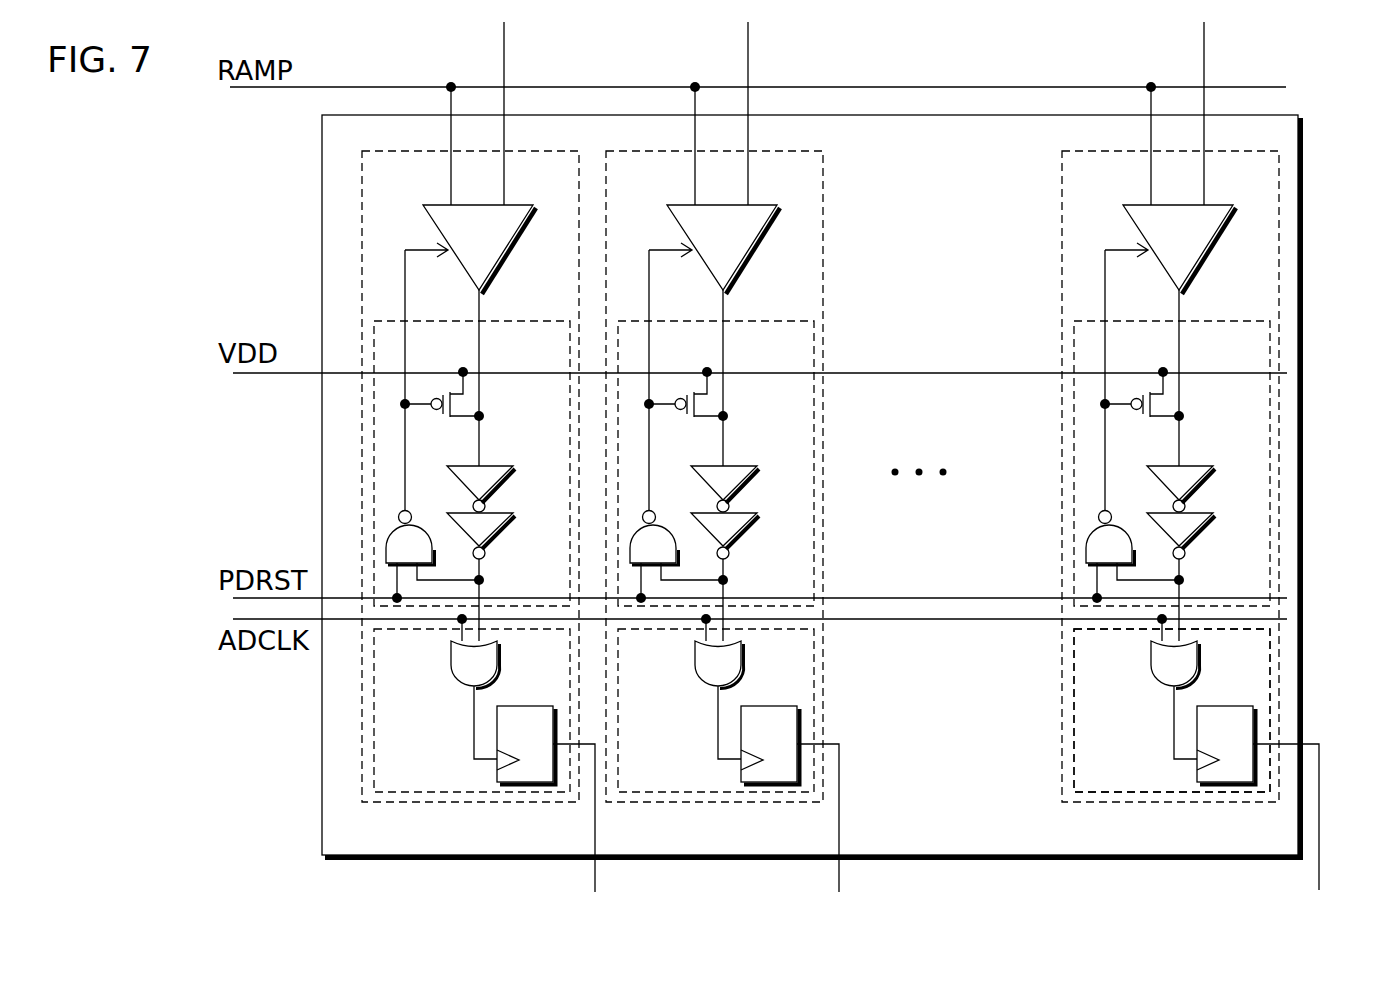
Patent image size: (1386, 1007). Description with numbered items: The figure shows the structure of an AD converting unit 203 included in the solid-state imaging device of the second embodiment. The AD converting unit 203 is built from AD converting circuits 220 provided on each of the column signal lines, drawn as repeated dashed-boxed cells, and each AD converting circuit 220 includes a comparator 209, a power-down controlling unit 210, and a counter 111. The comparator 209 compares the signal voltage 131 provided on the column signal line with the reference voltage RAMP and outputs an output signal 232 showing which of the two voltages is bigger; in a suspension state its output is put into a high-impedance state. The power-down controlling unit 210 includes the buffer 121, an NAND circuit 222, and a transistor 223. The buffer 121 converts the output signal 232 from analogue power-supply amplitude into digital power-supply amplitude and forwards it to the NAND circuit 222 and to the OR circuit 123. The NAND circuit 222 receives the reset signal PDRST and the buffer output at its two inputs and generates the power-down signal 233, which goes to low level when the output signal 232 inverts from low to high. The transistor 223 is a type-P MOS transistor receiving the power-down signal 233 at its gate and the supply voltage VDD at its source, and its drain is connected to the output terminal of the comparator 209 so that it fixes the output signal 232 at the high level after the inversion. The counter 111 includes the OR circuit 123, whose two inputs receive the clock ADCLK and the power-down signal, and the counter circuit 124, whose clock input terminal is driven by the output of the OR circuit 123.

The signal voltage 131 is at (1245, 113).
The AD converting unit 203 is at (1300, 193).
The comparator 209 is at (1245, 249).
The AD converting circuit 220 is at (1122, 476).
The power-down signal 233 is at (1068, 376).
The output signal 232 is at (1221, 378).
The transistor 223 is at (1179, 405).
The buffer 121 is at (1206, 512).
The power-down controlling unit 210 is at (1227, 463).
The NAND circuit 222 is at (1086, 557).
The counter 111 is at (1228, 710).
The OR circuit 123 is at (1157, 700).
The counter circuit 124 is at (1228, 718).